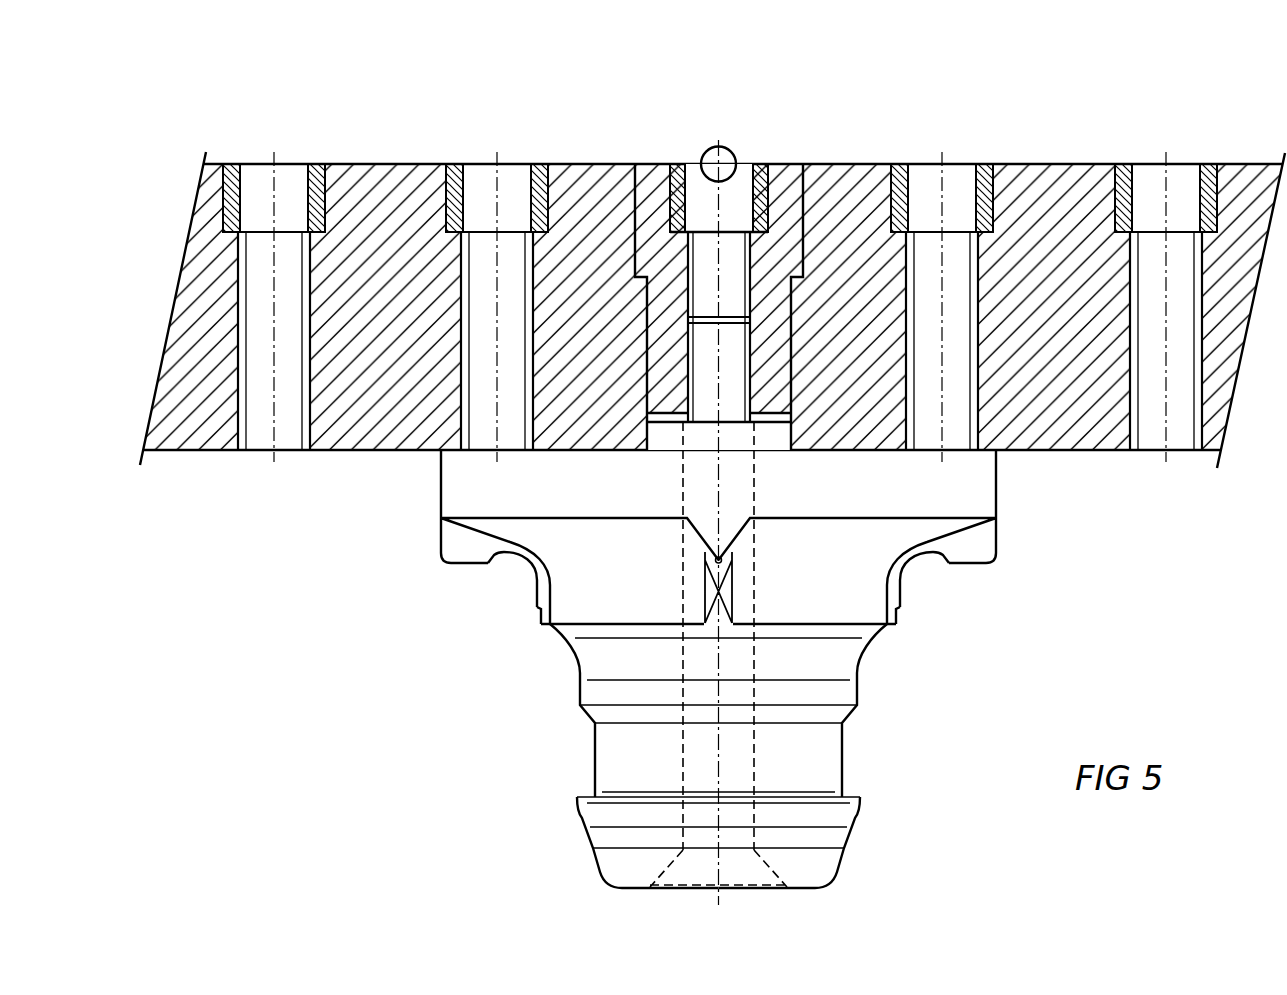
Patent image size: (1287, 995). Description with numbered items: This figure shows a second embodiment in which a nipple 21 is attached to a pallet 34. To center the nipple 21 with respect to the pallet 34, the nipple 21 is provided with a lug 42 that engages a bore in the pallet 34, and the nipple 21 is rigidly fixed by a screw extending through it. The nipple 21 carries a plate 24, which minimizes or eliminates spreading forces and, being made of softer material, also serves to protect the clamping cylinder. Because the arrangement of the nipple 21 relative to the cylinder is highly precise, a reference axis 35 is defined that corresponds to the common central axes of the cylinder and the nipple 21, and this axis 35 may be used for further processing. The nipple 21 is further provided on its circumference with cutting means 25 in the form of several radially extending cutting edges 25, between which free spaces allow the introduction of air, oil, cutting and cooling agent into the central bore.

The nipple 21 is at (850, 575).
The plate 24 is at (820, 867).
The cutting means 25 is at (467, 548).
The pallet 34 is at (847, 212).
The reference axis 35 is at (733, 222).
The lug 42 is at (545, 620).